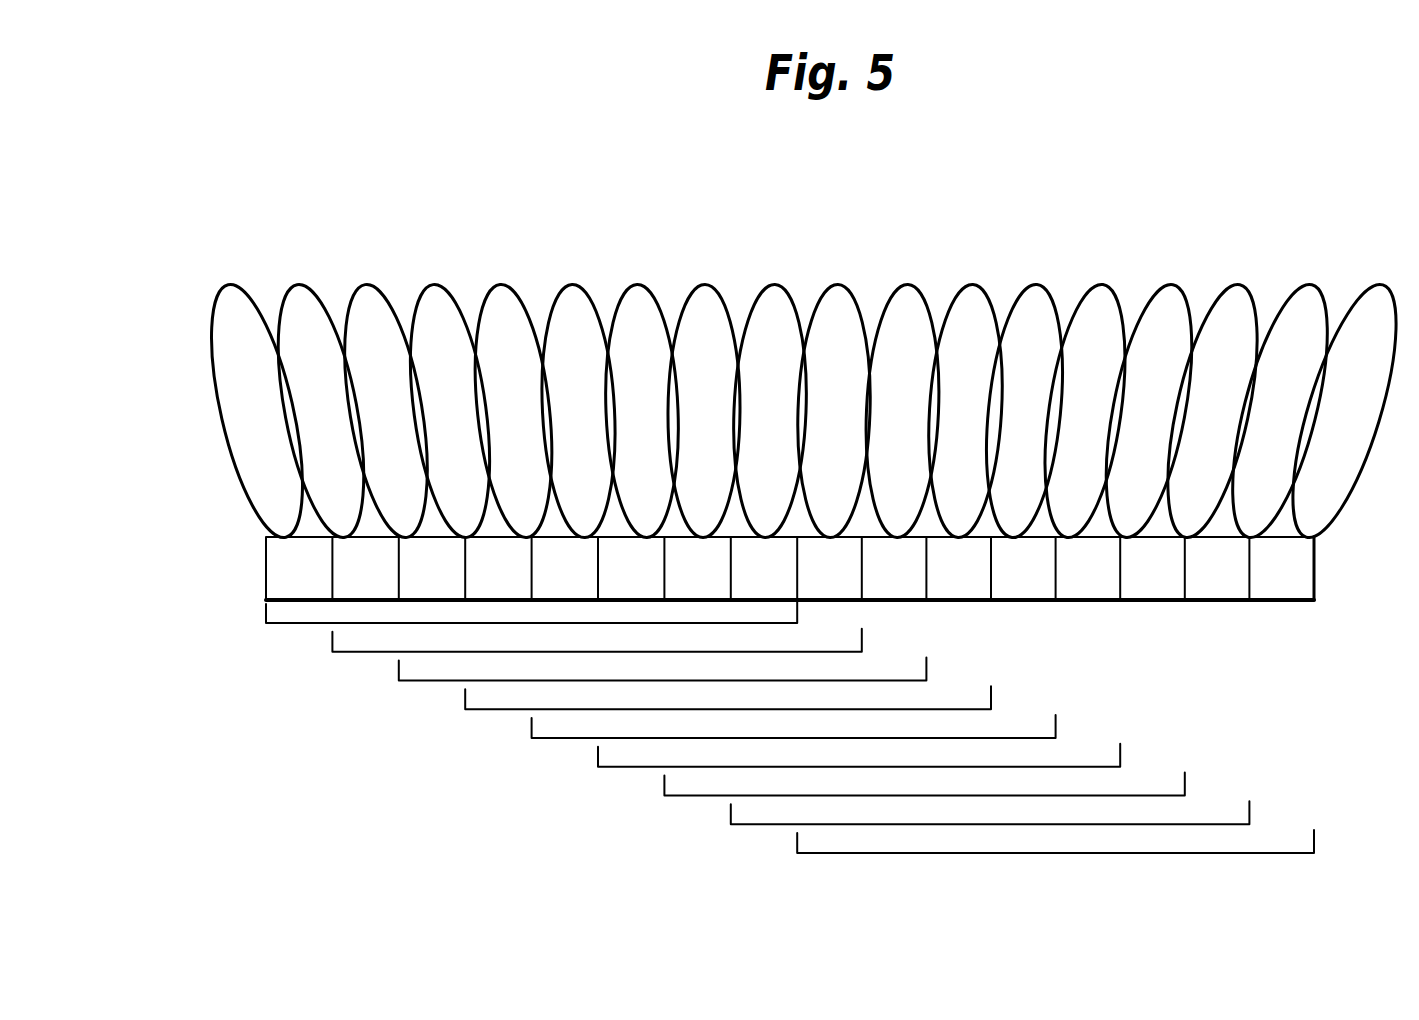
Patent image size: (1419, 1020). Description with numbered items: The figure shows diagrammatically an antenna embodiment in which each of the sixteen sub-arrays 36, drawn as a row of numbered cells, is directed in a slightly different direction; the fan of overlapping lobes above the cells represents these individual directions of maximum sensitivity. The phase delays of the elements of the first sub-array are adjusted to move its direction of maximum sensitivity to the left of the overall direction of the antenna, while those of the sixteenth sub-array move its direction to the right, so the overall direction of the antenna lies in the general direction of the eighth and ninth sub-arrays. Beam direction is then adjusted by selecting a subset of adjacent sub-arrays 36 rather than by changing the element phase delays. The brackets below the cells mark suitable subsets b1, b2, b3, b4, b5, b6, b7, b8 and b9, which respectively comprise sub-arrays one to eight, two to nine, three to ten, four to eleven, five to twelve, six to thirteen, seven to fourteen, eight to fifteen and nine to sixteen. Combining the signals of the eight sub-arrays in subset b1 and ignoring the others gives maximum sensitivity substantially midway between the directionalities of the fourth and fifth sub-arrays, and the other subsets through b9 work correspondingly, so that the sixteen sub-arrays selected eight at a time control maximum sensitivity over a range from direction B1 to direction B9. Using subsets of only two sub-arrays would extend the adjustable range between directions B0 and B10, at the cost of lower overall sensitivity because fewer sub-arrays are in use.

The direction B0 is at (318, 517).
The direction B1 is at (497, 517).
The direction B9 is at (1093, 517).
The direction B10 is at (1278, 517).
The sub-arrays 36 is at (1316, 576).
The subset b1 is at (266, 614).
The subset b2 is at (863, 636).
The subset b3 is at (927, 664).
The subset b4 is at (992, 693).
The subset b5 is at (1057, 722).
The subset b6 is at (1121, 751).
The subset b7 is at (1186, 780).
The subset b8 is at (1250, 808).
The subset b9 is at (1315, 837).